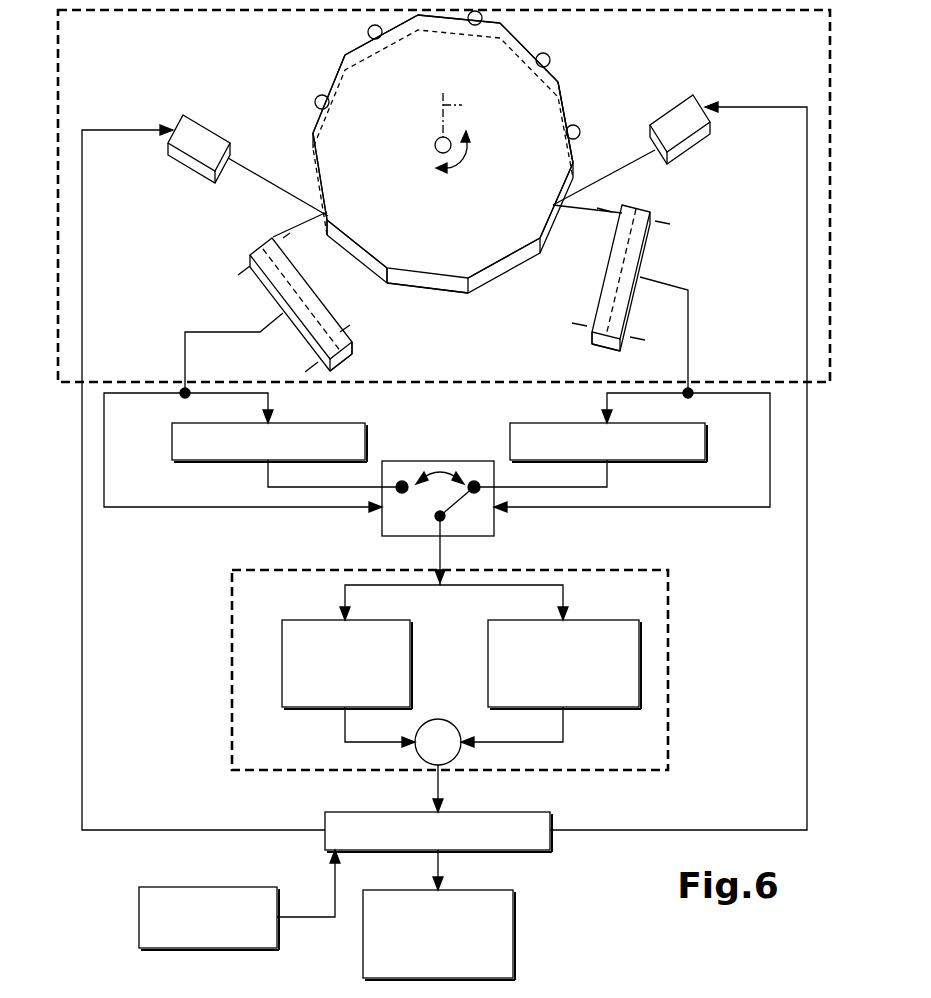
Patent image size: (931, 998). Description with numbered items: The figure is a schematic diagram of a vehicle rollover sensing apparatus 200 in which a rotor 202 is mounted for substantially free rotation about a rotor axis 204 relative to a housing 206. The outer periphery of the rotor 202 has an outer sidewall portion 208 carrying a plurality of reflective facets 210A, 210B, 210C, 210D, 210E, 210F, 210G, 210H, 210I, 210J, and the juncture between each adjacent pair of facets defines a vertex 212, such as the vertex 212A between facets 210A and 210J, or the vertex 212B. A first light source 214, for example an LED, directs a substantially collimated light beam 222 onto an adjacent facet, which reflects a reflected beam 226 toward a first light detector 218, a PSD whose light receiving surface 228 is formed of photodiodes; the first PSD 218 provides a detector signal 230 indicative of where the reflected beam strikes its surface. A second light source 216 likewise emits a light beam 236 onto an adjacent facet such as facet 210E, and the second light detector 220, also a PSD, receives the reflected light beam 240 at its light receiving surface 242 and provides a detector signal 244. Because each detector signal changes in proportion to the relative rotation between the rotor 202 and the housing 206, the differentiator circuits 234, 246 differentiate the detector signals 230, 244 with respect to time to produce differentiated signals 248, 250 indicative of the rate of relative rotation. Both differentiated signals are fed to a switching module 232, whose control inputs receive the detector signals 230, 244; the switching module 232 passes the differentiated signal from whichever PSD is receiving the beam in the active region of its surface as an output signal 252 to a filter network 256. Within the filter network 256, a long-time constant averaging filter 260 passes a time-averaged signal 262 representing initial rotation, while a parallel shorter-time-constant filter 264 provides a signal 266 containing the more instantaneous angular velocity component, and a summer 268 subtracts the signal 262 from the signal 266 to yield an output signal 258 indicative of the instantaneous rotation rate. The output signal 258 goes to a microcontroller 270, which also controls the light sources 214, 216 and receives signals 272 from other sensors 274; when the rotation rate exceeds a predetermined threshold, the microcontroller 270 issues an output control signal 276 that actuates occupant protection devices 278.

The vehicle rollover sensing apparatus 200 is at (838, 472).
The rotor 202 is at (518, 50).
The rotor axis 204 is at (462, 105).
The housing 206 is at (835, 140).
The outer sidewall portion 208 is at (575, 94).
The reflective facet 210A is at (305, 178).
The reflective facet 210B is at (341, 233).
The reflective facet 210C is at (443, 285).
The reflective facet 210D is at (493, 273).
The reflective facet 210E is at (556, 215).
The reflective facet 210F is at (566, 130).
The reflective facet 210G is at (540, 56).
The reflective facet 210H is at (482, 23).
The reflective facet 210I is at (375, 41).
The reflective facet 210J is at (329, 108).
The vertex 212 is at (340, 58).
The vertex 212A is at (337, 205).
The vertex 212B is at (397, 274).
The first light source 214 is at (213, 127).
The second light source 216 is at (683, 143).
The first light detector 218 is at (345, 305).
The second light detector 220 is at (647, 252).
The light beam 222 is at (262, 183).
The reflected beam 226 is at (290, 220).
The light receiving surface 228 is at (343, 328).
The detector signal 230 is at (237, 332).
The switching module 232 is at (433, 460).
The differentiator circuit 234 is at (170, 438).
The light beam 236 is at (618, 163).
The reflected light beam 240 is at (597, 193).
The light receiving surface 242 is at (600, 297).
The detector signal 244 is at (687, 330).
The differentiator circuit 246 is at (707, 438).
The differentiated signal 248 is at (264, 470).
The differentiated signal 250 is at (577, 488).
The output signal 252 is at (442, 543).
The filter network 256 is at (230, 688).
The output signal 258 is at (445, 790).
The long-time constant filter 260 is at (390, 620).
The signal 262 is at (343, 720).
The filter 264 is at (587, 620).
The signal 266 is at (530, 742).
The summer 268 is at (430, 717).
The microcontroller 270 is at (543, 852).
The signals 272 is at (333, 893).
The other sensors 274 is at (138, 928).
The output control signal 276 is at (440, 860).
The occupant protection devices 278 is at (517, 915).